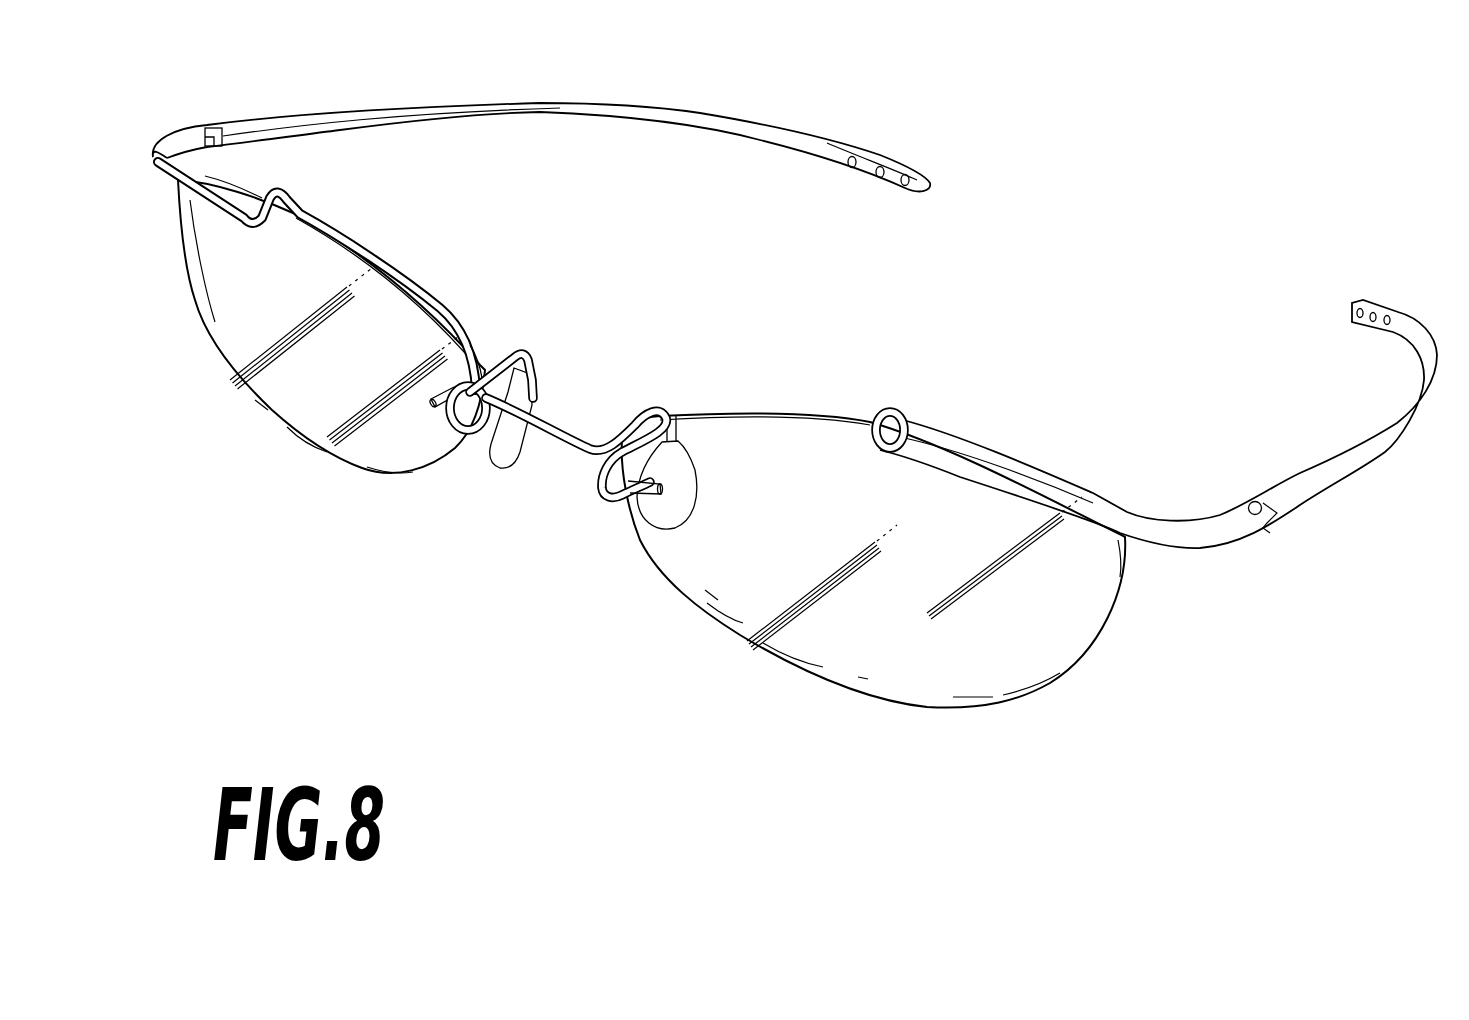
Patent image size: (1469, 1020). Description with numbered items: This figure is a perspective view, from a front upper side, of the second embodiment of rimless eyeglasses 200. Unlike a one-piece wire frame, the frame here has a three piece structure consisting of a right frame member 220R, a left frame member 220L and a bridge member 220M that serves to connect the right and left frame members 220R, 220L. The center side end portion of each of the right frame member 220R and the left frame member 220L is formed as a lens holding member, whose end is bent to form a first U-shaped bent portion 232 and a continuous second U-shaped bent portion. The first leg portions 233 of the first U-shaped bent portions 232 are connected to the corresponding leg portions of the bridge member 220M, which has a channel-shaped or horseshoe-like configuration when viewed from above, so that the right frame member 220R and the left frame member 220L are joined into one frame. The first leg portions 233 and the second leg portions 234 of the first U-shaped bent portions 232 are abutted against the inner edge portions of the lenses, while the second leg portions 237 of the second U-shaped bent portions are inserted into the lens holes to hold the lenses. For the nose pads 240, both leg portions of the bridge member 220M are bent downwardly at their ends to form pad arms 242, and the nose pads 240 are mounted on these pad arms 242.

The rimless eyeglasses 200 is at (613, 670).
The right frame member 220R is at (367, 247).
The left frame member 220L is at (977, 480).
The bridge member 220M is at (533, 430).
The first U-shaped bent portion 232 is at (603, 496).
The first leg portion of the first U-shaped bent portion 233 is at (478, 353).
The second leg portion of the first U-shaped bent portion 234 is at (478, 425).
The second leg portion of the second U-shaped bent portion 237 is at (433, 395).
The nose pad 240 is at (537, 397).
The pad arm 242 is at (540, 360).